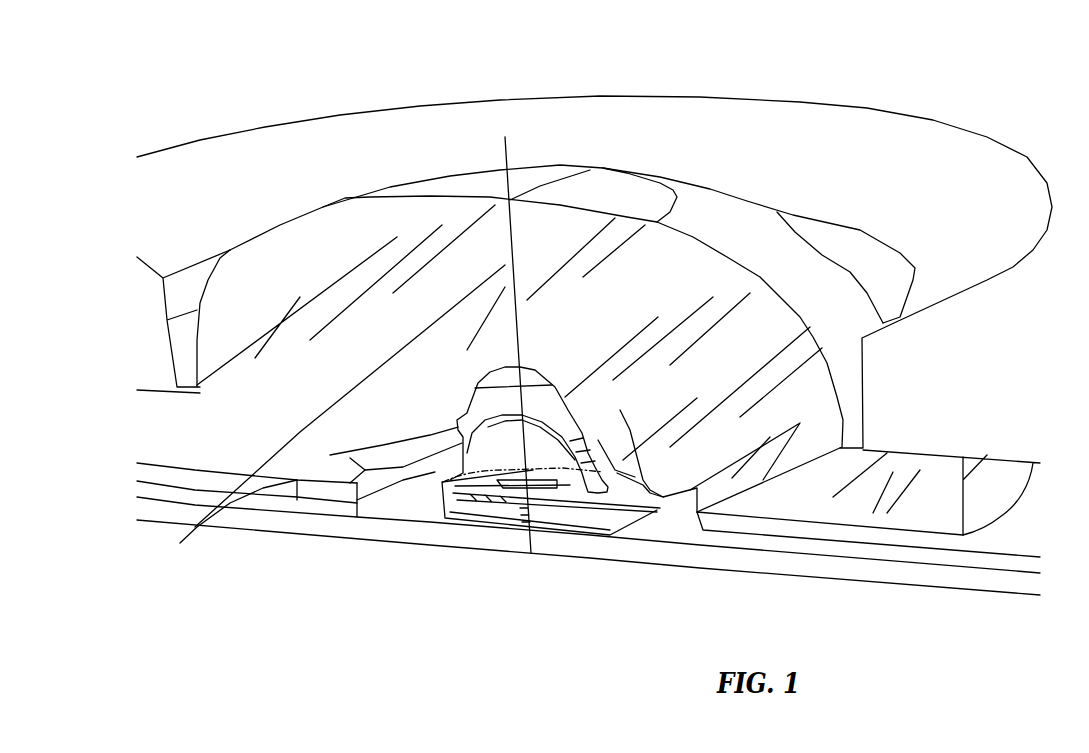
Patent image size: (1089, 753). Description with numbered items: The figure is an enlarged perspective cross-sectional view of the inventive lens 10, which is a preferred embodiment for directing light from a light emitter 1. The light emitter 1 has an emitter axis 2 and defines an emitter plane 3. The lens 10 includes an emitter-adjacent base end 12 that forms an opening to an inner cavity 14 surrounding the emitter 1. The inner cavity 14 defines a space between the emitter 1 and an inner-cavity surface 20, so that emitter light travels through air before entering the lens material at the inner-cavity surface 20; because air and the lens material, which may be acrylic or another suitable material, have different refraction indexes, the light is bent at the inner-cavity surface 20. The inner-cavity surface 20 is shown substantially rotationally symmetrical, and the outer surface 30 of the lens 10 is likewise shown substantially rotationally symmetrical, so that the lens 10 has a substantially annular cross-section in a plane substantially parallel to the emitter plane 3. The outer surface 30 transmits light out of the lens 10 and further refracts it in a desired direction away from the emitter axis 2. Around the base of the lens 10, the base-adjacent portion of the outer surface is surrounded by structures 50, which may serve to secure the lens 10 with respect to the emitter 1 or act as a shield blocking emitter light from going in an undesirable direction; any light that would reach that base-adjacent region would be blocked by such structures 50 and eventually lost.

The light emitter 1 is at (563, 488).
The emitter axis 2 is at (505, 158).
The emitter plane 3 is at (462, 500).
The lens 10 is at (779, 146).
The emitter-adjacent base end 12 is at (297, 480).
The inner cavity 14 is at (460, 437).
The inner-cavity surface 20 is at (312, 503).
The outer surface 30 is at (710, 217).
The structures 50 is at (947, 187).